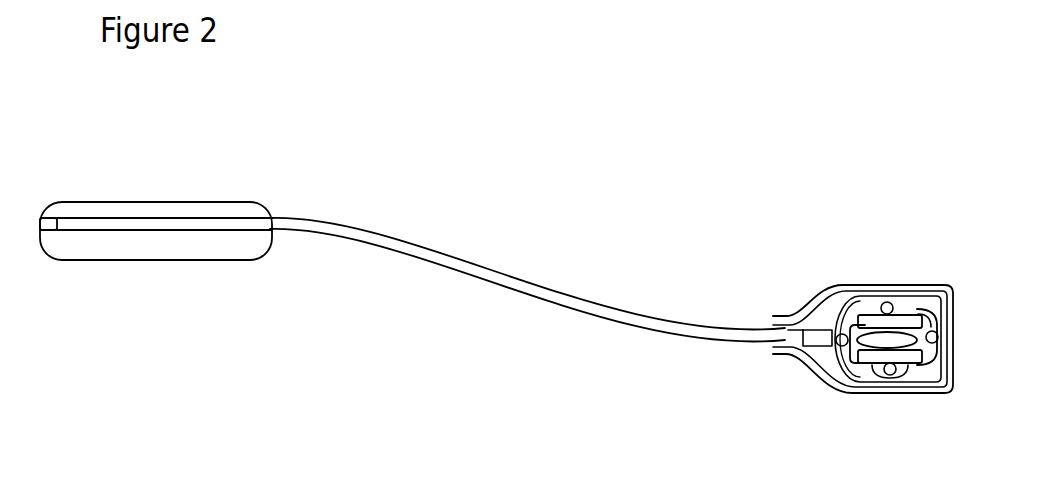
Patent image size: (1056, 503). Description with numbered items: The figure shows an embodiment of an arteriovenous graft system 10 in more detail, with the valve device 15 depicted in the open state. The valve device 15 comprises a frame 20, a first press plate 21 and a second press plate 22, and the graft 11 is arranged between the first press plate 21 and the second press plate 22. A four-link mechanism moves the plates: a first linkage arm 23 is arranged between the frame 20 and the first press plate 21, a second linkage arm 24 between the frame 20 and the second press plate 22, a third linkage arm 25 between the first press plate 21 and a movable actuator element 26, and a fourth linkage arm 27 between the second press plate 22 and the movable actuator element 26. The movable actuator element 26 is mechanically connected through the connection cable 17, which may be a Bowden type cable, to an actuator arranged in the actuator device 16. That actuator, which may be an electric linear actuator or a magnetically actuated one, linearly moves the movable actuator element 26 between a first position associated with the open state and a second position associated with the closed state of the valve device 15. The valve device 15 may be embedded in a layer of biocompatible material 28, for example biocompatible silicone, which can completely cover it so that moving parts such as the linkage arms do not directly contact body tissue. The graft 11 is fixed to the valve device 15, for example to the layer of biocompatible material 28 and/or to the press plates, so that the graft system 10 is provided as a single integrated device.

The arteriovenous graft system 10 is at (577, 235).
The graft 11 is at (862, 328).
The valve device 15 is at (825, 372).
The actuator device 16 is at (158, 254).
The connection cable 17 is at (535, 295).
The frame 20 is at (933, 352).
The first press plate 21 is at (907, 317).
The second press plate 22 is at (903, 358).
The first linkage arm 23 is at (933, 317).
The second linkage arm 24 is at (917, 372).
The third linkage arm 25 is at (853, 307).
The movable actuator element 26 is at (820, 340).
The fourth linkage arm 27 is at (858, 373).
The layer of biocompatible material 28 is at (895, 285).